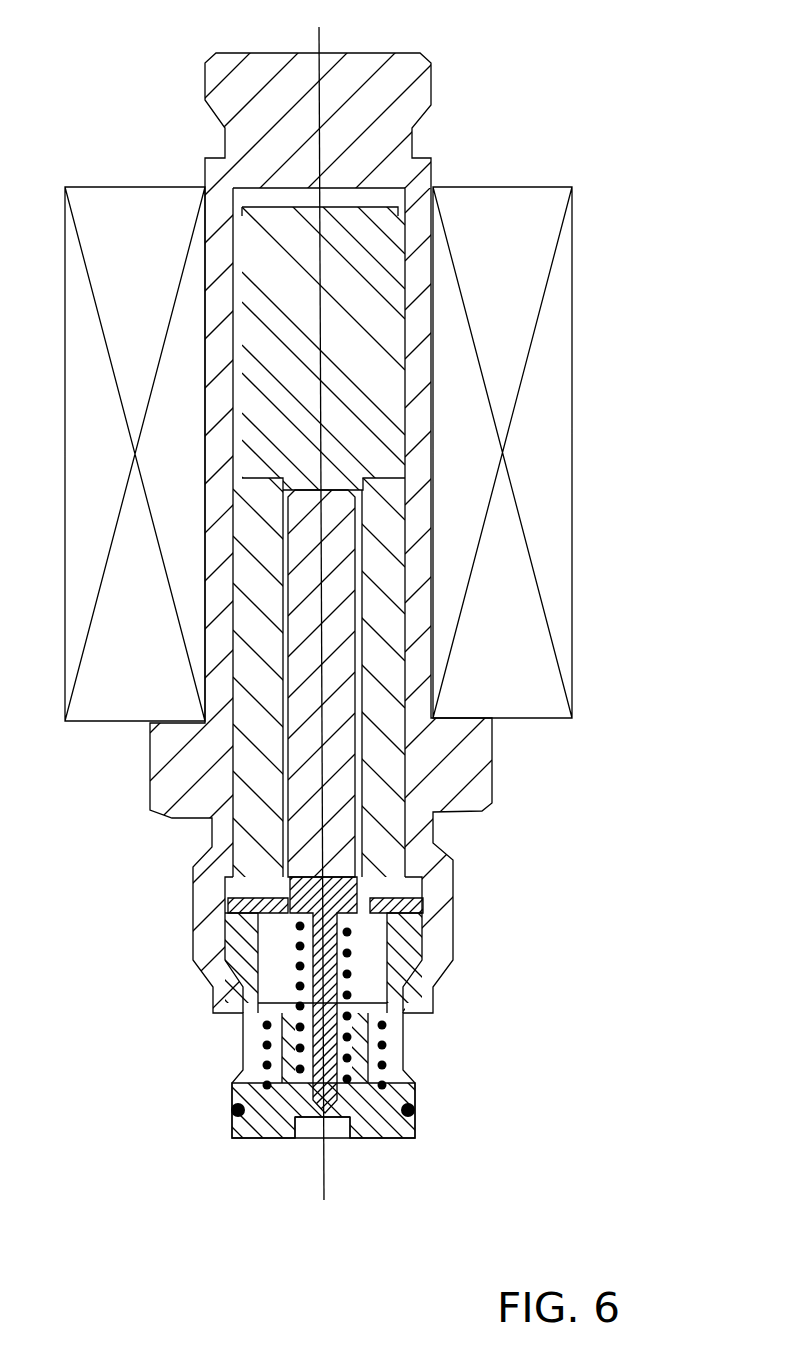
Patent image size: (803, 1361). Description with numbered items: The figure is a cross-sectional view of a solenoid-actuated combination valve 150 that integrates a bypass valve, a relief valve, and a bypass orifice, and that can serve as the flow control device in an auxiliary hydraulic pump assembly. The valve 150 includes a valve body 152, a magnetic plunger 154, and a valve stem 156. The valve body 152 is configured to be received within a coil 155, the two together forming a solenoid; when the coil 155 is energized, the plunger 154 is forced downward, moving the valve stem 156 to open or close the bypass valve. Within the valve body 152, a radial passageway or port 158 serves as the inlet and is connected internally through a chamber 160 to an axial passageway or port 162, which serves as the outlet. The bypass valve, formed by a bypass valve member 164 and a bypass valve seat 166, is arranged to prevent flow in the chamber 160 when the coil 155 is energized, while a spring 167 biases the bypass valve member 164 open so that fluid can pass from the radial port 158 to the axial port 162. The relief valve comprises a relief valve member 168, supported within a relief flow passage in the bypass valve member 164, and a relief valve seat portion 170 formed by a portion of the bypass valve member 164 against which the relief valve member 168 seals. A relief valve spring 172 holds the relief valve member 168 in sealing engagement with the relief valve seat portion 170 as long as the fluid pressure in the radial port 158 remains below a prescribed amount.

The combination valve 150 is at (508, 175).
The valve body 152 is at (430, 307).
The magnetic plunger 154 is at (360, 370).
The coil 155 is at (572, 393).
The valve stem 156 is at (340, 625).
The radial passageway (port) 158 is at (400, 1045).
The chamber 160 is at (415, 1105).
The axial passageway (port) 162 is at (347, 1127).
The bypass valve member 164 is at (297, 1075).
The bypass valve seat 166 is at (298, 1117).
The spring 167 is at (263, 1042).
The relief valve member 168 is at (327, 1113).
The relief valve seat portion 170 is at (405, 1128).
The relief valve spring 172 is at (350, 933).